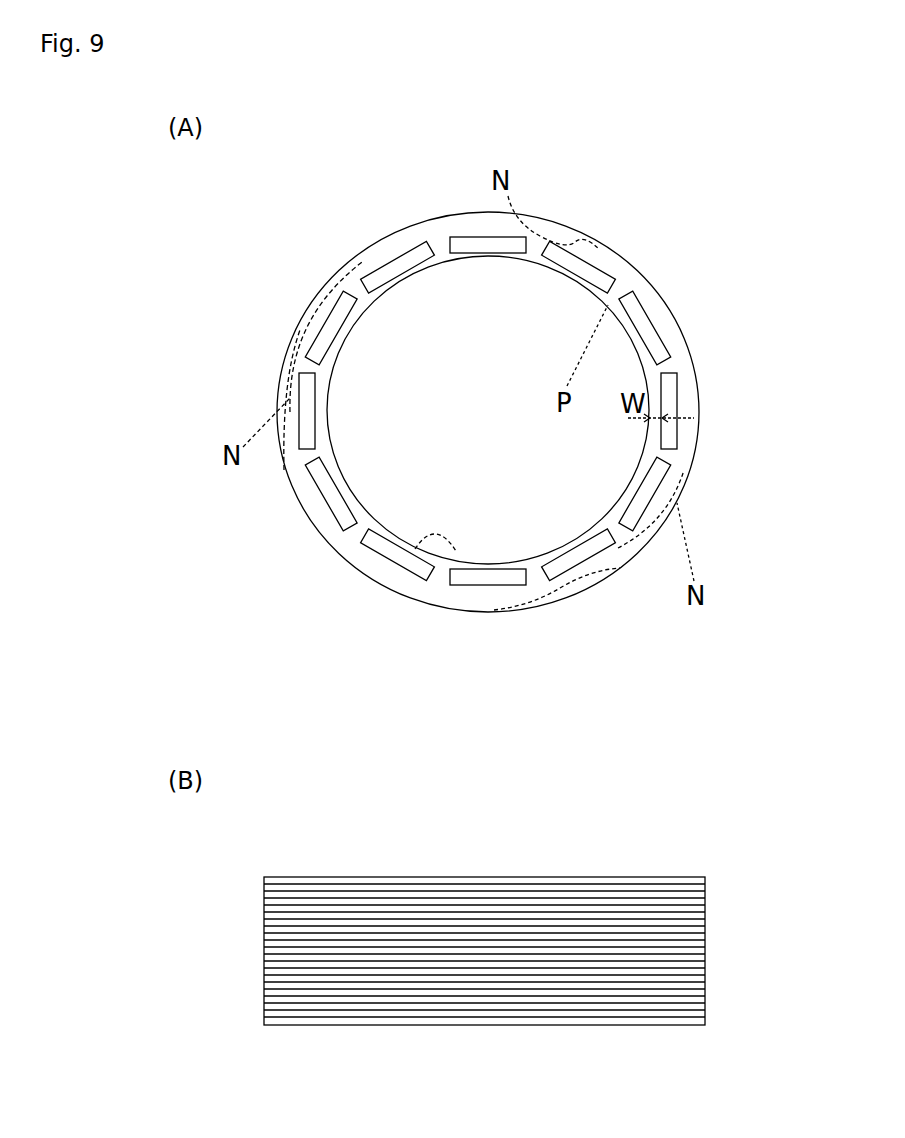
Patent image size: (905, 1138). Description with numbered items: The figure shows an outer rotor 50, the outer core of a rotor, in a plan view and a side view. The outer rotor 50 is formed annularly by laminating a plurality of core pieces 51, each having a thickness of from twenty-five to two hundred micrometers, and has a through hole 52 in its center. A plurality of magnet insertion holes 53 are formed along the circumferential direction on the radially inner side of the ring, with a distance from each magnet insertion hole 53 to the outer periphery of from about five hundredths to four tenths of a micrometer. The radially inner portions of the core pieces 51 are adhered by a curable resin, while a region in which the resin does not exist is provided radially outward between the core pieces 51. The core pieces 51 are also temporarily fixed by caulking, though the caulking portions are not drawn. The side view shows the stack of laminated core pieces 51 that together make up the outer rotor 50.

The outer rotor 50 is at (517, 595).
The core piece 51 is at (672, 318).
The through hole 52 is at (424, 548).
The magnet insertion hole 53 is at (458, 243).